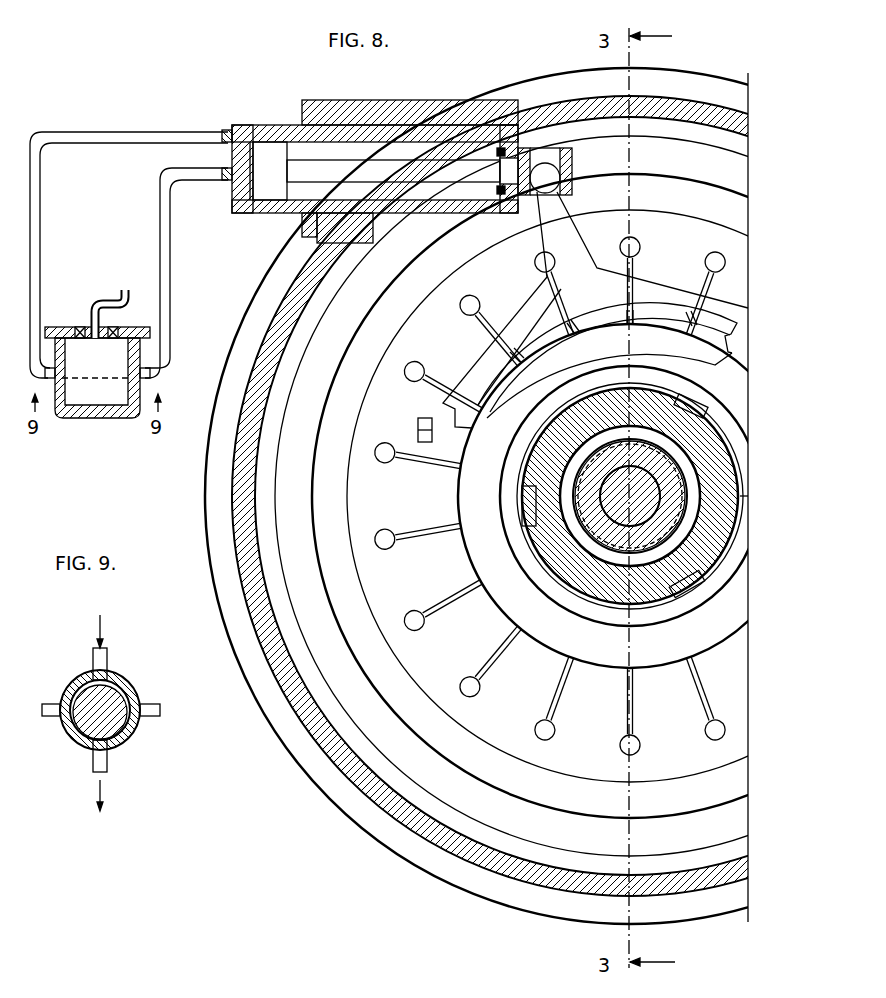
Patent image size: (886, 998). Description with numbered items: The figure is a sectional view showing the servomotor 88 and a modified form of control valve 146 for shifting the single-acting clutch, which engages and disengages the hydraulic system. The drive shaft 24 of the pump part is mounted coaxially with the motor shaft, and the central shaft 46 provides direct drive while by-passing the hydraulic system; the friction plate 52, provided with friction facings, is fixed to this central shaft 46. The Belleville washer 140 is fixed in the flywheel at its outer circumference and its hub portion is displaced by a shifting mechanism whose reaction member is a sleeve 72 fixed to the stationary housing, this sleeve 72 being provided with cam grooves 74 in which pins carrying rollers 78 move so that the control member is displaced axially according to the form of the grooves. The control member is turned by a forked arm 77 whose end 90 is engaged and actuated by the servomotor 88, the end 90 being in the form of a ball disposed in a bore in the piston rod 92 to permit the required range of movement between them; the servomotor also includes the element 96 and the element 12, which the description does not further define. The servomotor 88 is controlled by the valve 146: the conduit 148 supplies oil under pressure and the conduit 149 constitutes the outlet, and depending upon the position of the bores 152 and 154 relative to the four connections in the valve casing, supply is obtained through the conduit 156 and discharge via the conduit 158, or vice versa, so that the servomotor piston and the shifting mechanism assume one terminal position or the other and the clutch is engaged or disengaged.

In FIG. 8, the axle 12 is at (640, 406).
In FIG. 8, the drive shaft 24 is at (688, 580).
In FIG. 8, the central shaft 46 is at (660, 492).
In FIG. 8, the friction plate 52 is at (685, 768).
In FIG. 8, the sleeve 72 is at (560, 548).
In FIG. 8, the cam grooves 74 is at (555, 440).
In FIG. 8, the forked arm 77 is at (588, 301).
In FIG. 8, the rollers 78 is at (528, 510).
In FIG. 8, the servomotor 88 is at (276, 126).
In FIG. 8, the end of forked arm 90 is at (552, 178).
In FIG. 8, the piston rod 92 is at (440, 170).
In FIG. 8, the piston 96 is at (266, 205).
In FIG. 8, the Belleville washer 140 is at (587, 496).
In FIG. 8, the valve 146 is at (115, 362).
In FIG. 9, the conduit 148 is at (108, 656).
In FIG. 9, the conduit 149 is at (108, 758).
In FIG. 9, the bore 152 is at (76, 694).
In FIG. 9, the bore 154 is at (142, 720).
In FIG. 8, the conduit 156 is at (172, 142).
In FIG. 9, the conduit 156 is at (52, 718).
In FIG. 8, the conduit 158 is at (165, 262).
In FIG. 9, the conduit 158 is at (150, 706).